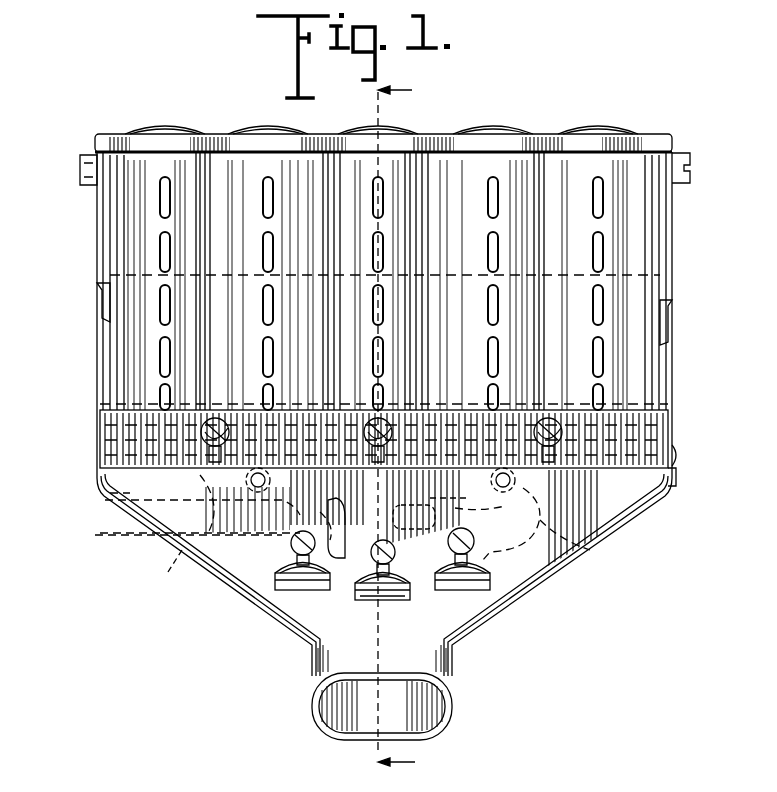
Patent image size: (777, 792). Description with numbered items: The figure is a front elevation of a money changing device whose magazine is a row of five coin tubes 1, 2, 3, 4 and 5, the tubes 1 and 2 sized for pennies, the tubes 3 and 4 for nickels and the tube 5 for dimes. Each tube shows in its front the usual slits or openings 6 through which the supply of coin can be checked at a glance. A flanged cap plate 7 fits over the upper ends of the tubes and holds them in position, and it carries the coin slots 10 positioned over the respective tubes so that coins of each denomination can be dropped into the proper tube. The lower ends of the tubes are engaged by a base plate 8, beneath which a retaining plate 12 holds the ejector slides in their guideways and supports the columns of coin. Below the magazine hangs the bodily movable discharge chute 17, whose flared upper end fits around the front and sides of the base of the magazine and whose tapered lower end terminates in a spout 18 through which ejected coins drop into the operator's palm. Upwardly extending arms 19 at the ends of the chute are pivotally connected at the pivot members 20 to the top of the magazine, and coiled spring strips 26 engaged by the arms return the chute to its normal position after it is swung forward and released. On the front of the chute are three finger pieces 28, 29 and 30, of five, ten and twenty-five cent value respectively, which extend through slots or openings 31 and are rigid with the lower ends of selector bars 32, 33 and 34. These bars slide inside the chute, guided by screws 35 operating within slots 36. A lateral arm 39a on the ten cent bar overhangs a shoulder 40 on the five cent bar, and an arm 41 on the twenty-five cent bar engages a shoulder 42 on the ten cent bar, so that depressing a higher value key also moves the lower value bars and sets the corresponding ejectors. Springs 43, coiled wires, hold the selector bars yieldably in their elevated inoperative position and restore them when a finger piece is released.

The coin tube 1 is at (158, 165).
The coin tube 2 is at (243, 165).
The coin tube 3 is at (402, 165).
The coin tube 4 is at (508, 162).
The coin tube 5 is at (641, 150).
The slits or openings 6 is at (160, 243).
The cap plate 7 is at (553, 137).
The base plate 8 is at (672, 458).
The coin slots 10 is at (279, 130).
The retaining plate 12 is at (657, 493).
The discharge chute 17 is at (262, 590).
The spout 18 is at (328, 668).
The arms 19 is at (97, 297).
The pivot members 20 is at (690, 163).
The spring strips 26 is at (100, 355).
The finger piece 28 is at (298, 578).
The finger piece 29 is at (380, 602).
The finger piece 30 is at (480, 568).
The slots or openings 31 is at (316, 582).
The selector bar 32 is at (402, 575).
The selector bar 33 is at (412, 578).
The selector bar 34 is at (590, 550).
The screws 35 is at (370, 424).
The slots 36 is at (560, 455).
The lateral arm 39a is at (118, 497).
The shoulder 40 is at (199, 528).
The arm 41 is at (462, 497).
The shoulder 42 is at (414, 508).
The springs 43 is at (140, 455).